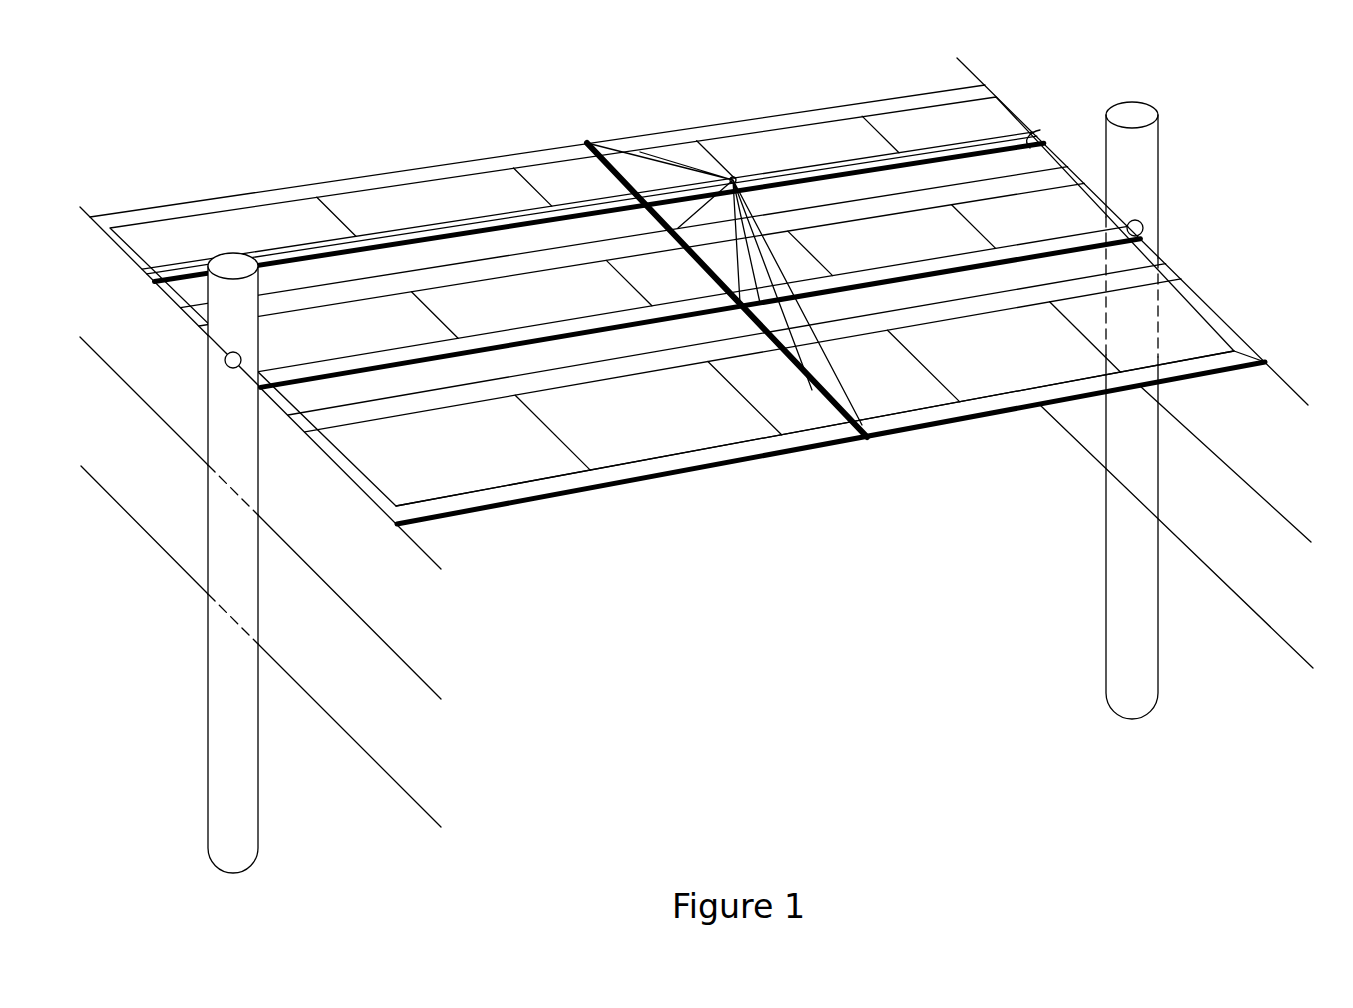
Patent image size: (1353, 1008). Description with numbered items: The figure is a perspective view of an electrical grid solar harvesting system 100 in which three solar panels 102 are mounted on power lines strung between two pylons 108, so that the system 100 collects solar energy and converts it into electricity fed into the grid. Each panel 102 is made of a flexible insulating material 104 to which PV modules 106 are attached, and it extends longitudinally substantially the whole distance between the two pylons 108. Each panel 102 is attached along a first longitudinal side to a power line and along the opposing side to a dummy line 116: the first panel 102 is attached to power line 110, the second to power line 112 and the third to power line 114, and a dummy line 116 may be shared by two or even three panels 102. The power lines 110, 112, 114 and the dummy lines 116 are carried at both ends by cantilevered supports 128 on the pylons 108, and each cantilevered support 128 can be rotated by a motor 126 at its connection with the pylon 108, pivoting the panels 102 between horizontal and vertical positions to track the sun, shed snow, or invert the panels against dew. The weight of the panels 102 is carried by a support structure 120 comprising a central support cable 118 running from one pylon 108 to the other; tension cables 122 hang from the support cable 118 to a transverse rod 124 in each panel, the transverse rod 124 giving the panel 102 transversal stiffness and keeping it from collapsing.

The electrical grid solar harvesting system 100 is at (701, 438).
The solar panel 102 is at (706, 329).
The flexible insulating material 104 is at (557, 488).
The PV module 106 is at (885, 400).
The pylon 108 is at (1050, 361).
The power line 110 is at (455, 517).
The power line 112 is at (1088, 272).
The power line 114 is at (855, 158).
The dummy line 116 is at (865, 100).
The central support cable 118 is at (1078, 118).
The support structure 120 is at (683, 140).
The tension cable 122 is at (648, 156).
The transverse rod 124 is at (813, 390).
The motor 126 is at (177, 382).
The cantilevered support 128 is at (1272, 374).